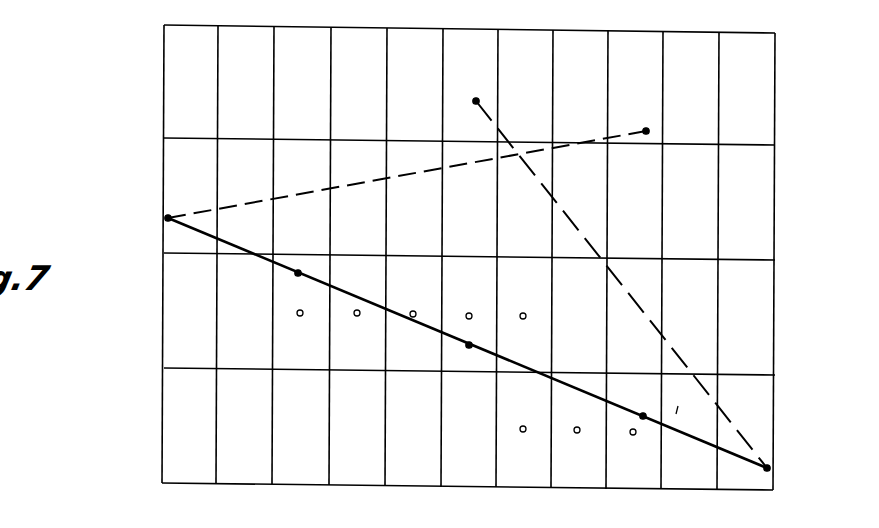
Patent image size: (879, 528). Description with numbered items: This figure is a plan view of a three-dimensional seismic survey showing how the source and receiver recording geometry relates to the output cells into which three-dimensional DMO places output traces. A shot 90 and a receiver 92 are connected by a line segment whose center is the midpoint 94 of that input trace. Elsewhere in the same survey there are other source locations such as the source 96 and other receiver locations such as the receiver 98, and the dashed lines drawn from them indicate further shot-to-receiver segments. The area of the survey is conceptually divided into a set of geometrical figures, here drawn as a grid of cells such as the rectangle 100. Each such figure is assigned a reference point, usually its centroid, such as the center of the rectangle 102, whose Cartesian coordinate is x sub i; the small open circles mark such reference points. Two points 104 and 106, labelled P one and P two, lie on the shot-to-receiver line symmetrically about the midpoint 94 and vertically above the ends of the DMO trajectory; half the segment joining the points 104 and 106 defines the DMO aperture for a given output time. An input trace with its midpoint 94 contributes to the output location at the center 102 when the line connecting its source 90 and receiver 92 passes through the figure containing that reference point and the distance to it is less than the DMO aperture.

The shot 90 is at (170, 216).
The receiver 92 is at (771, 467).
The midpoint 94 is at (475, 345).
The other source location 96 is at (476, 99).
The other receiver location 98 is at (649, 131).
The rectangle 100 is at (343, 256).
The center of the rectangle 102 is at (351, 318).
The first aperture end point 104 is at (298, 271).
The second aperture end point 106 is at (636, 438).